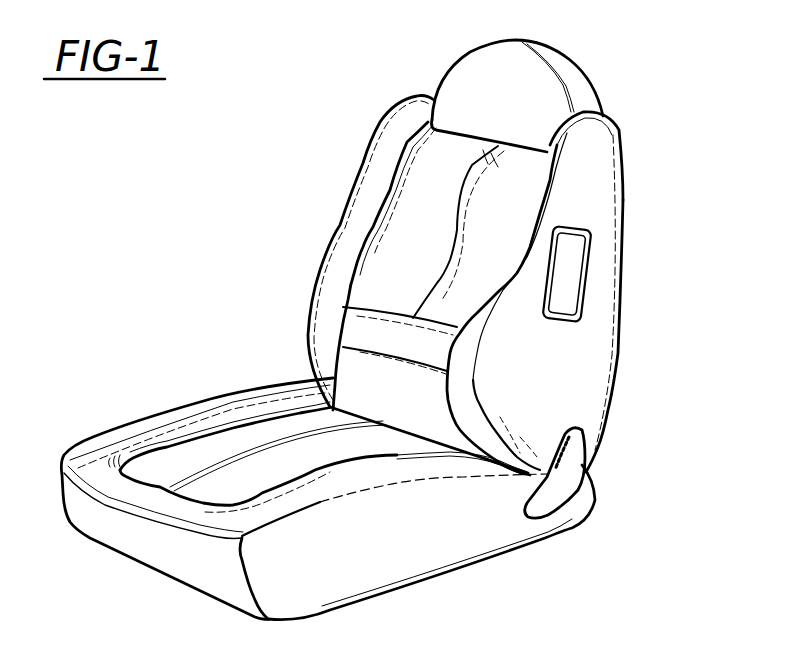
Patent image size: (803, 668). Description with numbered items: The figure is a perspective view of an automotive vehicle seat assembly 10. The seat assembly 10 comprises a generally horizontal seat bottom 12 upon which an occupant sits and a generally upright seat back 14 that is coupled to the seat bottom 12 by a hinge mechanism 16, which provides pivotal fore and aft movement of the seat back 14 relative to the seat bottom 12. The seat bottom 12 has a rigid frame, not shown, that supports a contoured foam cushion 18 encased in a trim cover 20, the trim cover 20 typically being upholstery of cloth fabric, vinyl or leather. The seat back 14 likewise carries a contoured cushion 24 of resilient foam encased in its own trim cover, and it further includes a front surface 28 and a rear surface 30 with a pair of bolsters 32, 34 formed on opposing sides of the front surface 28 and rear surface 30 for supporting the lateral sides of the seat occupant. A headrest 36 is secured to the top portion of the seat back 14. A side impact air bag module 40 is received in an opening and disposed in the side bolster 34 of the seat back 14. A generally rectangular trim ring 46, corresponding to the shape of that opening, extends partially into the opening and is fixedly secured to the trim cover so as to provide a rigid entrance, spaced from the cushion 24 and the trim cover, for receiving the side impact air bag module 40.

The vehicle seat assembly 10 is at (156, 247).
The seat bottom 12 is at (109, 439).
The seat back 14 is at (395, 243).
The hinge mechanism 16 is at (578, 450).
The foam cushion 18 is at (527, 549).
The trim cover 20 is at (203, 528).
The contoured cushion 24 is at (623, 202).
The front surface 28 is at (506, 221).
The rear surface 30 is at (644, 118).
The bolster 32 is at (318, 308).
The side bolster 34 is at (592, 362).
The headrest 36 is at (488, 63).
The side impact air bag module 40 is at (578, 261).
The trim ring 46 is at (588, 298).